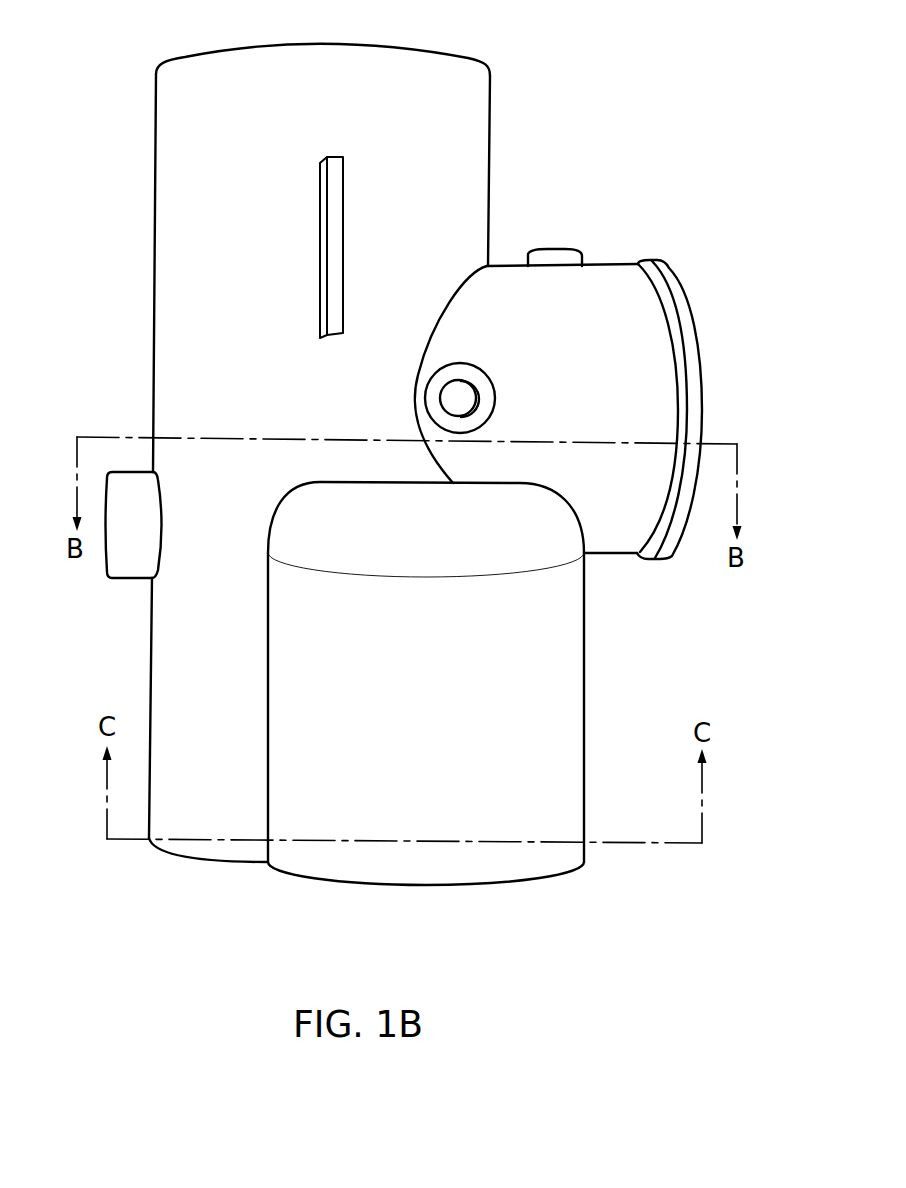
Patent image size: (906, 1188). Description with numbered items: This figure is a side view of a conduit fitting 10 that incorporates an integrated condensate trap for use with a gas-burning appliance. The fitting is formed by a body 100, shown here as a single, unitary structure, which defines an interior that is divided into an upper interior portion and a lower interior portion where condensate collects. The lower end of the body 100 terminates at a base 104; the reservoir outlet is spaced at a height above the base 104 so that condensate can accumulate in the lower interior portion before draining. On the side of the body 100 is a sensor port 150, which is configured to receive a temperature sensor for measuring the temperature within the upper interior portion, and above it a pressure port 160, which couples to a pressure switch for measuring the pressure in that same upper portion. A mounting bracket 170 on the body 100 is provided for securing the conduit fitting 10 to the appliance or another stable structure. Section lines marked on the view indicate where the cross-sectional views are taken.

The conduit fitting 10 is at (608, 52).
The body 100 is at (154, 120).
The base 104 is at (463, 886).
The sensor port 150 is at (462, 393).
The pressure port 160 is at (553, 248).
The mounting bracket 170 is at (322, 217).